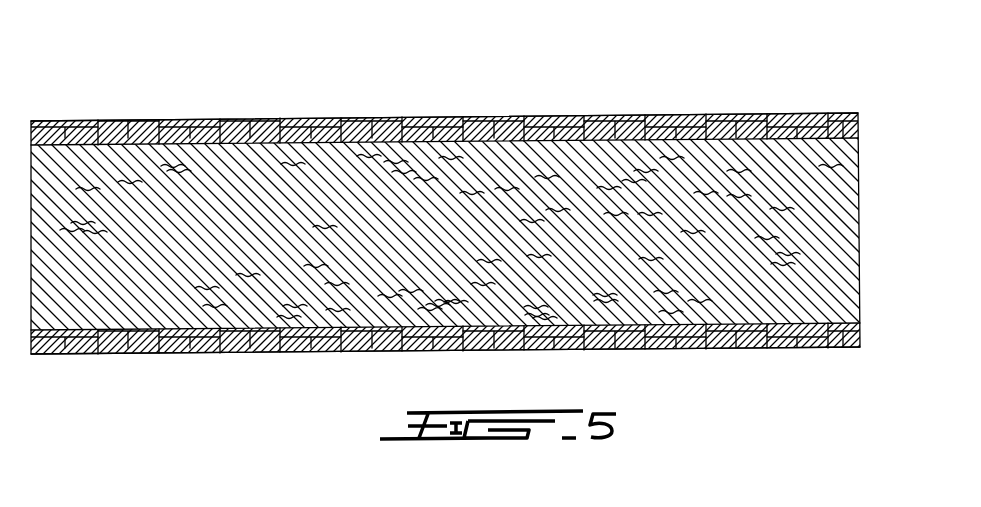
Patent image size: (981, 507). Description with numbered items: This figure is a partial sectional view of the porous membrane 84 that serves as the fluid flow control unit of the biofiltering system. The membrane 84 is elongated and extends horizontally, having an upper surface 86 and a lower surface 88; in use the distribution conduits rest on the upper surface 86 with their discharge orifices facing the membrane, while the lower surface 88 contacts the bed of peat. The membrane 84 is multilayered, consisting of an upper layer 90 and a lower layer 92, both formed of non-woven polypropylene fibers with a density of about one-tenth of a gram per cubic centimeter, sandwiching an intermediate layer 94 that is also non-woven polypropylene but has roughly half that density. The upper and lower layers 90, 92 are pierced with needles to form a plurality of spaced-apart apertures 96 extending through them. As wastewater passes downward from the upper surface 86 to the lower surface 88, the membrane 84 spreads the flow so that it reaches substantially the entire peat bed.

The porous membrane 84 is at (527, 108).
The upper surface 86 is at (716, 113).
The lower surface 88 is at (130, 356).
The upper layer 90 is at (313, 118).
The lower layer 92 is at (203, 356).
The intermediate layer 94 is at (300, 282).
The apertures 96 is at (202, 121).